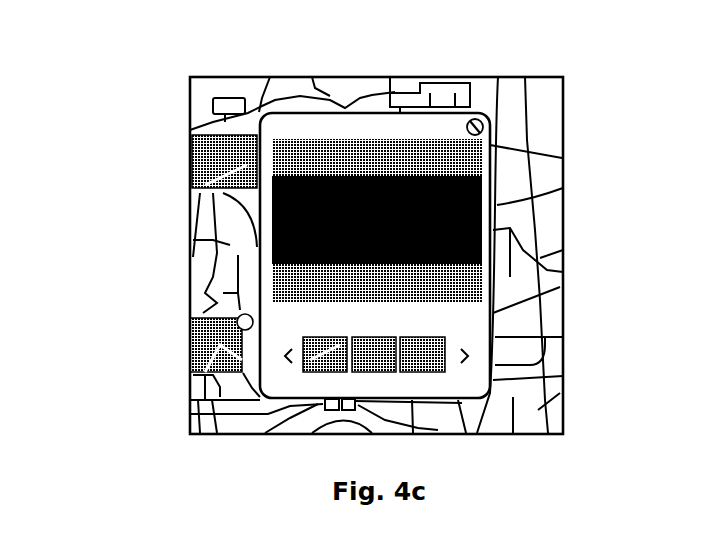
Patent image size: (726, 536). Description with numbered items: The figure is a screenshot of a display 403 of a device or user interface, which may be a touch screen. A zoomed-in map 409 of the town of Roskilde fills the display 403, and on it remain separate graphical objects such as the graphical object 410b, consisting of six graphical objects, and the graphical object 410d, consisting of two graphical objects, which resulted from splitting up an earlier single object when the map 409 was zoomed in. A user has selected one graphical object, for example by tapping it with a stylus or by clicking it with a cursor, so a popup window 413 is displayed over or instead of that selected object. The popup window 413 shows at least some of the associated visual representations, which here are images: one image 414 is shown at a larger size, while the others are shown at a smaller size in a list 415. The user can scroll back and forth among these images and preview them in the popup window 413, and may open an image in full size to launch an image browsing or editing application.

The display 403 is at (553, 79).
The map 409 is at (256, 95).
The graphical object 410b is at (190, 165).
The graphical object 410d is at (190, 348).
The popup window 413 is at (563, 188).
The visual representation shown in larger size 414 is at (482, 272).
The list 415 is at (454, 303).